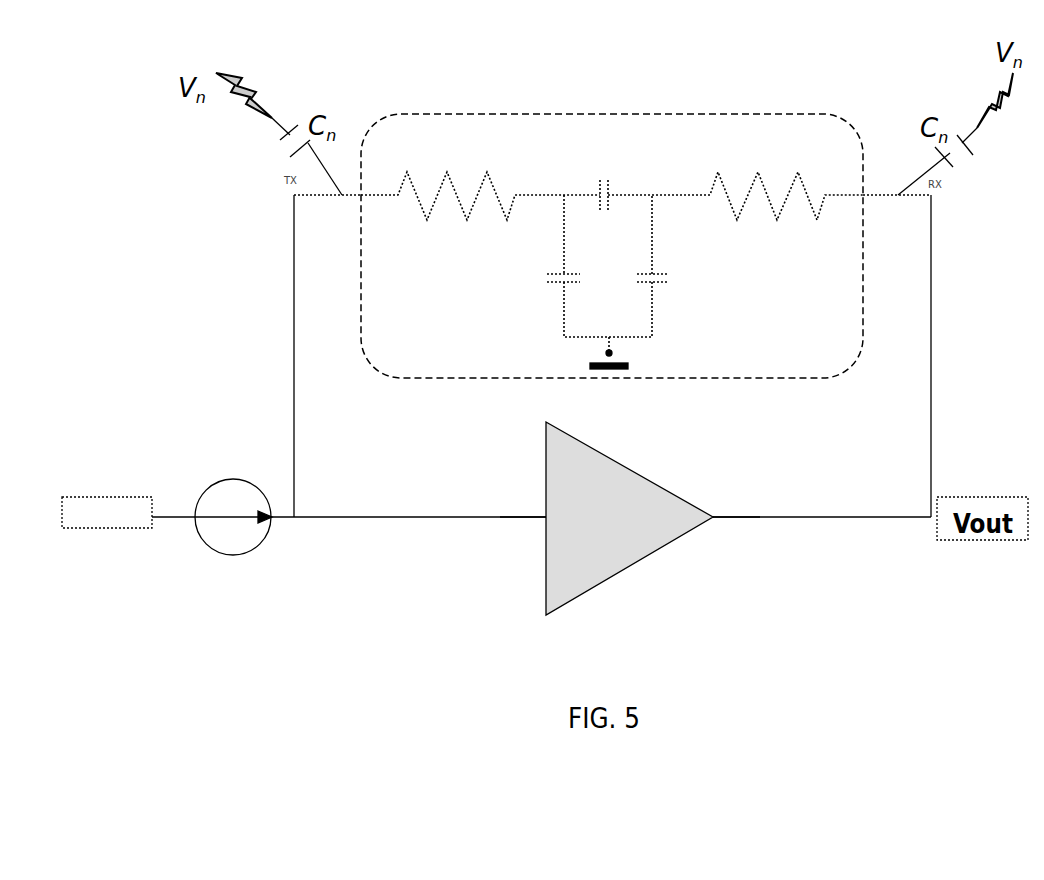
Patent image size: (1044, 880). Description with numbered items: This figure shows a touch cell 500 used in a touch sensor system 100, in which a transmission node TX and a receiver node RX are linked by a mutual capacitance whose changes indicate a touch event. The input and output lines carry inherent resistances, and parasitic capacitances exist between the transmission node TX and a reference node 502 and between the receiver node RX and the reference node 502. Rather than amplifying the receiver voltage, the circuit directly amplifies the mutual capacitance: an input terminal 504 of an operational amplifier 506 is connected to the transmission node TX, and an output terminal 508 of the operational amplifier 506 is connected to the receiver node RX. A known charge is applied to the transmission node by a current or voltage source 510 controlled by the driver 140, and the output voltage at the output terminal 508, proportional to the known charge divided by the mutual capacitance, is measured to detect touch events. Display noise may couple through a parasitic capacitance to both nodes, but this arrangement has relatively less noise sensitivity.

The touch sensor system 100 is at (876, 613).
The driver 140 is at (108, 497).
The touch cell 500 is at (545, 113).
The reference node 502 is at (632, 367).
The input terminal 504 is at (525, 522).
The operational amplifier 506 is at (637, 562).
The output terminal 508 is at (712, 518).
The current or voltage source 510 is at (243, 560).